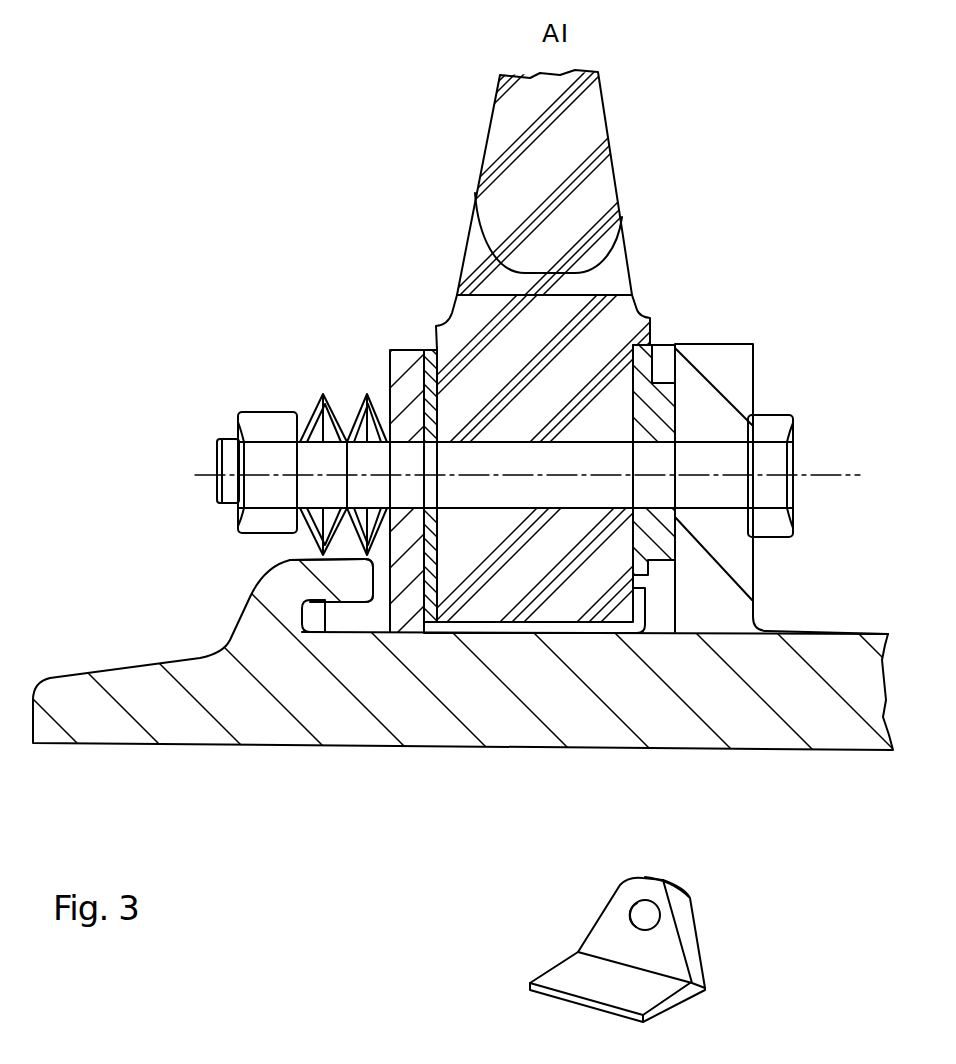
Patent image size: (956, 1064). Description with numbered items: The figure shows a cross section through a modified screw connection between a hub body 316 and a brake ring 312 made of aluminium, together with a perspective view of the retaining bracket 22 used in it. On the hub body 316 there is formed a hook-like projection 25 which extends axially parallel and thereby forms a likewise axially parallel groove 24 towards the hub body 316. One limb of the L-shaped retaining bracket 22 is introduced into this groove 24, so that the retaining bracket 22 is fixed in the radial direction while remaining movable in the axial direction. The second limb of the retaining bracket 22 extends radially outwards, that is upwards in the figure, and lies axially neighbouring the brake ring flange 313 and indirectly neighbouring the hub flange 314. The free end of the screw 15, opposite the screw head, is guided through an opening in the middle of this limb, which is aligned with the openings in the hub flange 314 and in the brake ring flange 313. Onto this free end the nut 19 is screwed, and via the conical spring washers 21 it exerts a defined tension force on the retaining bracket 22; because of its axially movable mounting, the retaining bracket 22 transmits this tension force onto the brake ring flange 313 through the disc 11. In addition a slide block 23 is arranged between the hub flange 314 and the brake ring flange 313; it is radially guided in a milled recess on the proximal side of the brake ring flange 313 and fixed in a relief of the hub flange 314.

The disc 11 is at (427, 352).
The screw 15 is at (785, 432).
The nut 19 is at (252, 425).
The conical spring washers 21 is at (320, 398).
The retaining bracket 22 is at (408, 377).
The slide block 23 is at (665, 400).
The groove 24 is at (315, 614).
The hook-like projection 25 is at (297, 577).
The brake ring 312 is at (615, 270).
The brake ring flange 313 is at (635, 332).
The hub flange 314 is at (717, 403).
The hub body 316 is at (322, 718).